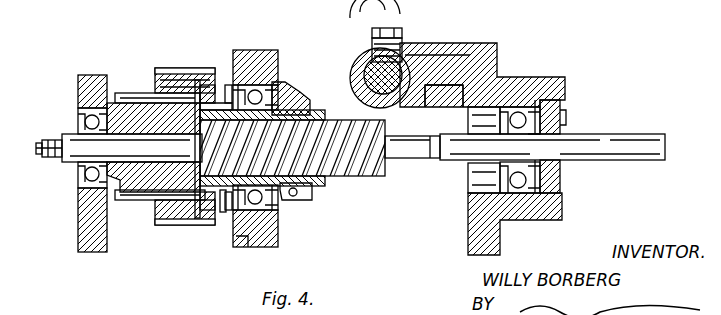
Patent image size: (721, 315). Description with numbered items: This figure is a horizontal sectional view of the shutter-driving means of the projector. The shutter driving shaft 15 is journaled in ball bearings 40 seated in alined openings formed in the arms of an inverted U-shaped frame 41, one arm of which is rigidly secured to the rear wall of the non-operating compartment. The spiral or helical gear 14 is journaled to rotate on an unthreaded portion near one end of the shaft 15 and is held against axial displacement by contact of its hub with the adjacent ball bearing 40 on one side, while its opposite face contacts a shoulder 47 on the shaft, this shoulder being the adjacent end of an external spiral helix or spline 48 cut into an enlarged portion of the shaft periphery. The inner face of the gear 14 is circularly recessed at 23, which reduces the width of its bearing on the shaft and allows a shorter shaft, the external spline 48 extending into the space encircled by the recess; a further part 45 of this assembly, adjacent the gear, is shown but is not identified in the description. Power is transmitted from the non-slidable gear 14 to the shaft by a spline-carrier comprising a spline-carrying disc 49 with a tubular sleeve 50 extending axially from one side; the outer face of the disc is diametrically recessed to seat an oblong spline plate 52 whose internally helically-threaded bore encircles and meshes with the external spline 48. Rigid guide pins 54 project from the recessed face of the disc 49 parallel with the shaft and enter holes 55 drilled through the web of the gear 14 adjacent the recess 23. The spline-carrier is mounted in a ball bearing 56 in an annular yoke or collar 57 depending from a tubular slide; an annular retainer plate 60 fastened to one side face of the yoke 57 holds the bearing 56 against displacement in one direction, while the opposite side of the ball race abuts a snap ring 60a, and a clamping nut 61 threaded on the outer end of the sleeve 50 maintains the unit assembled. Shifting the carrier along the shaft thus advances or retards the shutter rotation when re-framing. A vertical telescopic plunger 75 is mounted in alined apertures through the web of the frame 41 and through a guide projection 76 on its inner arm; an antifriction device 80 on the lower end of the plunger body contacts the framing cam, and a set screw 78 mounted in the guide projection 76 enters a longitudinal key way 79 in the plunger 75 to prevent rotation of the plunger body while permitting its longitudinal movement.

The spiral or helical gear 14 is at (178, 80).
The shutter driving shaft 15 is at (78, 209).
The circular recess 23 is at (197, 80).
The ball bearing 40 is at (78, 108).
The inverted U-shaped frame 41 is at (498, 45).
The sleeve 45 is at (124, 112).
The shoulder 47 is at (206, 85).
The external spiral helix or spline 48 is at (330, 128).
The spline-carrying disc 49 is at (229, 85).
The tubular sleeve 50 is at (316, 110).
The spline plate 52 is at (224, 214).
The guide pins 54 is at (140, 95).
The holes 55 is at (165, 70).
The ball bearing 56 is at (282, 88).
The yoke or collar 57 is at (256, 60).
The annular retainer plate 60 is at (280, 232).
The snap ring 60a is at (240, 247).
The clamping nut 61 is at (310, 186).
The plunger 75 is at (418, 78).
The guide projection 76 is at (440, 85).
The set screw 78 is at (398, 30).
The key way 79 is at (372, 65).
The antifriction device 80 is at (352, 10).